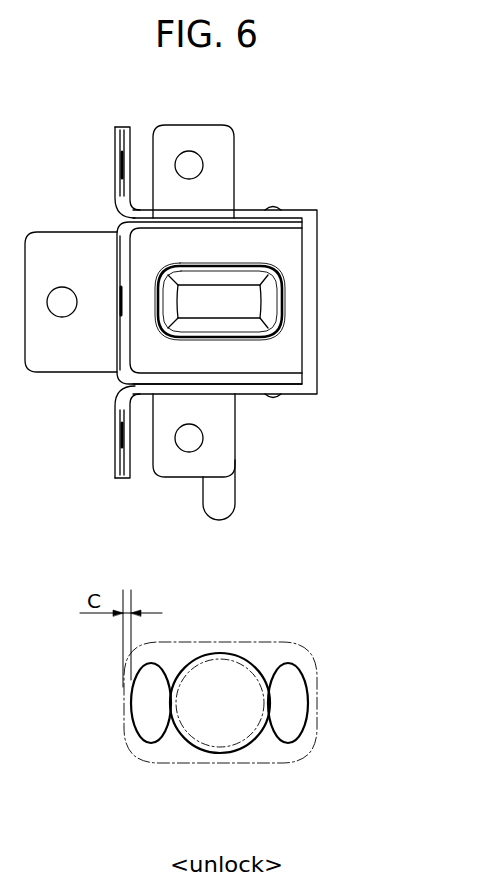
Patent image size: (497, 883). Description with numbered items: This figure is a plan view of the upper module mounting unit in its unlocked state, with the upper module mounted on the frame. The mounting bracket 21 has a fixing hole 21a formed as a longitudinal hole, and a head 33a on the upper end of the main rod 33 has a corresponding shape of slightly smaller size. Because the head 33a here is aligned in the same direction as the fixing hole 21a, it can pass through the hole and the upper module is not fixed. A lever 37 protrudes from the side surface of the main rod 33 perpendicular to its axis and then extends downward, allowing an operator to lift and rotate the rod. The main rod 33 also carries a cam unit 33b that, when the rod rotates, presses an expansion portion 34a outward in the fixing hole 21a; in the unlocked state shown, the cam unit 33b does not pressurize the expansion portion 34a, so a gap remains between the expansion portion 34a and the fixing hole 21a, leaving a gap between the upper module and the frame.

The mounting bracket 21 is at (272, 243).
The fixing hole 21a is at (292, 647).
The main rod 33 is at (232, 707).
The head 33a is at (247, 302).
The cam unit 33b is at (222, 648).
The expansion portion 34a is at (297, 703).
The lever 37 is at (225, 495).